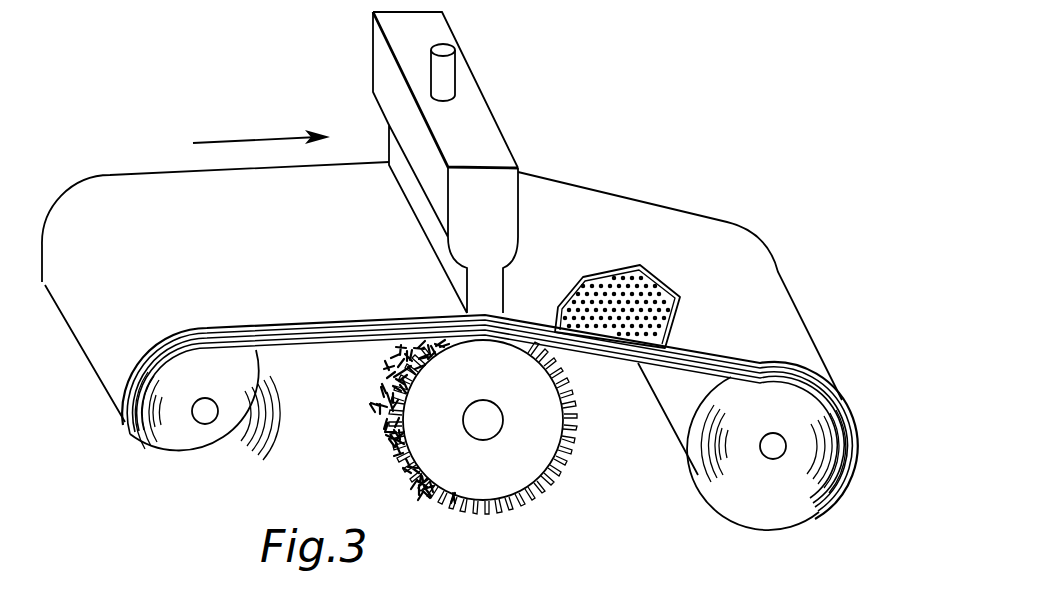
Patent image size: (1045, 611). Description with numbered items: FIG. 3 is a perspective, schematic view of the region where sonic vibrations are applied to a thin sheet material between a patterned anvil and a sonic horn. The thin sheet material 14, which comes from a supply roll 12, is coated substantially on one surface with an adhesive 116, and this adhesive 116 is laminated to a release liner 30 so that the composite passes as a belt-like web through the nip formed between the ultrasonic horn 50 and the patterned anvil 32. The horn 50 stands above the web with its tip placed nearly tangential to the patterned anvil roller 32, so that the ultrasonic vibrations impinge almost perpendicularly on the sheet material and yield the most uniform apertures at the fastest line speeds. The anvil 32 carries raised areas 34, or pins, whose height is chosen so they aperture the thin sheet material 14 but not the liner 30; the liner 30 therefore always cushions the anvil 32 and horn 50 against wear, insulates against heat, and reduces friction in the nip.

The supply roll 12 is at (175, 480).
The thin sheet material 14 is at (610, 360).
The release liner 30 is at (607, 213).
The patterned anvil 32 is at (484, 454).
The raised areas 34 is at (463, 500).
The ultrasonic horn 50 is at (481, 117).
The adhesive 116 is at (650, 287).